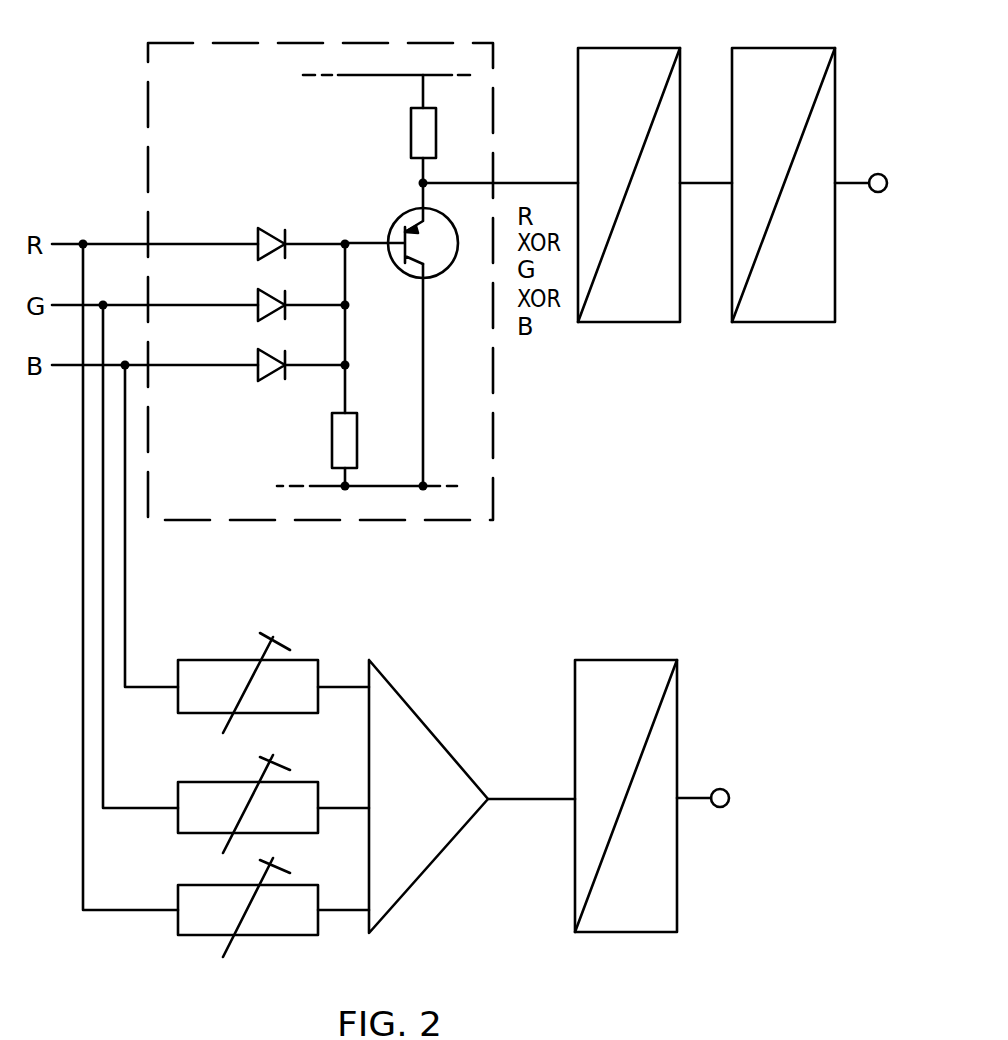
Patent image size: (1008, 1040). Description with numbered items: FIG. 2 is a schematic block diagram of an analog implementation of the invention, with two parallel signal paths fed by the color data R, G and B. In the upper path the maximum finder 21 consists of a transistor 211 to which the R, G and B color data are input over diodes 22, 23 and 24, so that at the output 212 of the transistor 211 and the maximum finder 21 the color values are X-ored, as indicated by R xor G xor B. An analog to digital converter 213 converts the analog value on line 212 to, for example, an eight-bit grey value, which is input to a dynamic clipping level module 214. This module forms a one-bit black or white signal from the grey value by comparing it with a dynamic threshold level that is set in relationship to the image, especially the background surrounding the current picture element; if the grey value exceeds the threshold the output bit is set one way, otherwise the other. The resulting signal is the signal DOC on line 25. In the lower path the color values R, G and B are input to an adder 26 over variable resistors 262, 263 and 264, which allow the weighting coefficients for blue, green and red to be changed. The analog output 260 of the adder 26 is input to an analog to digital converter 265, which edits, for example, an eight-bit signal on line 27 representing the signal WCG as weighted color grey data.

The maximum finder 21 is at (493, 490).
The transistor 211 is at (391, 230).
The output line of transistor 212 is at (524, 182).
The analog to digital converter 213 is at (623, 48).
The dynamic clipping level module 214 is at (770, 50).
The diode 22 is at (257, 238).
The diode 23 is at (256, 299).
The diode 24 is at (255, 361).
The line 25 is at (845, 185).
The adder 26 is at (422, 714).
The analog output of adder 260 is at (527, 797).
The variable resistor 262 is at (178, 665).
The variable resistor 263 is at (178, 793).
The variable resistor 264 is at (176, 897).
The analog to digital converter 265 is at (602, 662).
The line 27 is at (693, 797).